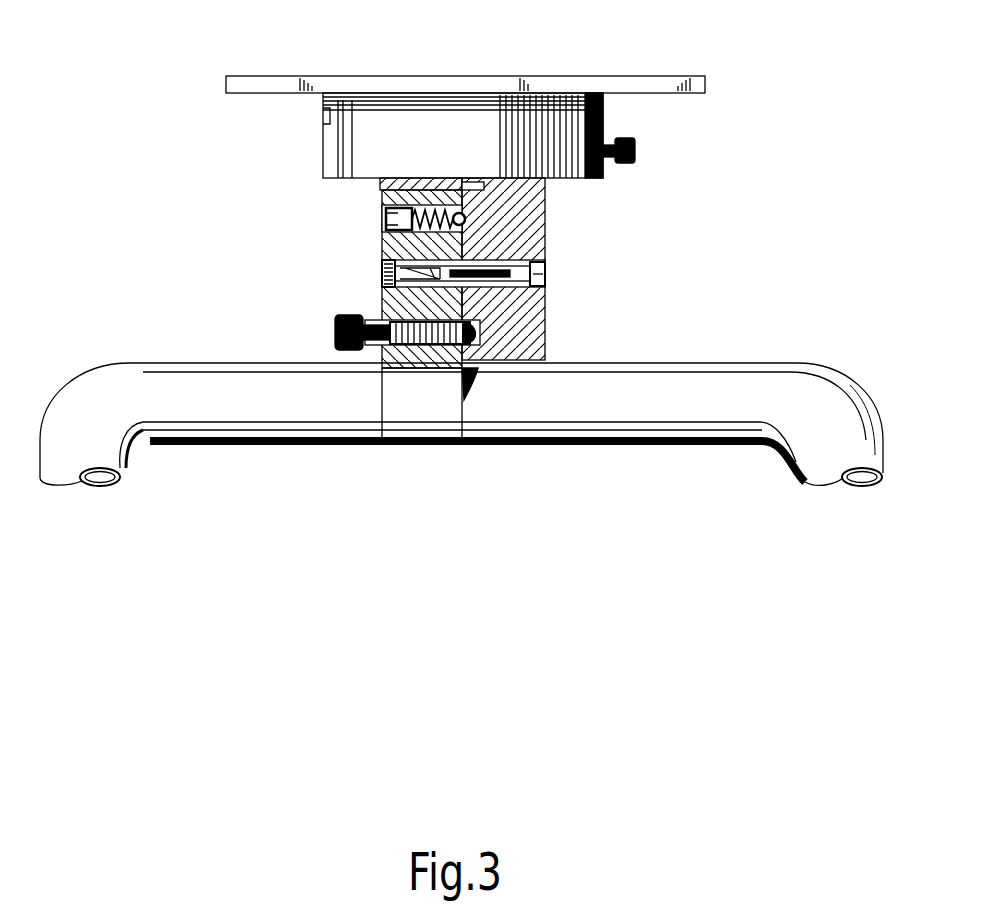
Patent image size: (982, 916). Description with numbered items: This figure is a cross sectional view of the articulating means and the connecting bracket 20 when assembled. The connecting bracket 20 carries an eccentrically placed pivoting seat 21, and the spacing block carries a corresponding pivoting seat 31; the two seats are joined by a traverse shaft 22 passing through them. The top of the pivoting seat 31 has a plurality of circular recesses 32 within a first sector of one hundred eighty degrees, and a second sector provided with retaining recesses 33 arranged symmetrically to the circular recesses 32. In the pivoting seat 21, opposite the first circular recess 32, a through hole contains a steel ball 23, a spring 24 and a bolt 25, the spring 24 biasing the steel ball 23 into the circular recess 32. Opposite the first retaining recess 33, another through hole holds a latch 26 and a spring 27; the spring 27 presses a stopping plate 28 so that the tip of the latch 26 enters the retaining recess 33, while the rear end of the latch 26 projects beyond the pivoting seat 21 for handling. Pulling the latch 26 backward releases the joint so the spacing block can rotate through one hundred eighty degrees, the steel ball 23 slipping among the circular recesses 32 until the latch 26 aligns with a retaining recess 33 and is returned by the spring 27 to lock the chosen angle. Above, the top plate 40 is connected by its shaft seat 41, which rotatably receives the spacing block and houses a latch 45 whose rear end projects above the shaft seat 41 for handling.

The connecting bracket 20 is at (258, 410).
The pivoting seat 21 is at (384, 307).
The traverse shaft 22 is at (384, 272).
The steel ball 23 is at (456, 180).
The spring 24 is at (386, 246).
The bolt 25 is at (386, 214).
The latch 26 is at (335, 328).
The spring 27 is at (420, 372).
The stopping plate 28 is at (445, 372).
The pivoting seat 31 is at (520, 247).
The circular recesses 32 is at (478, 216).
The retaining recesses 33 is at (488, 322).
The top plate 40 is at (422, 80).
The shaft seat 41 is at (363, 146).
The latch 45 is at (635, 150).